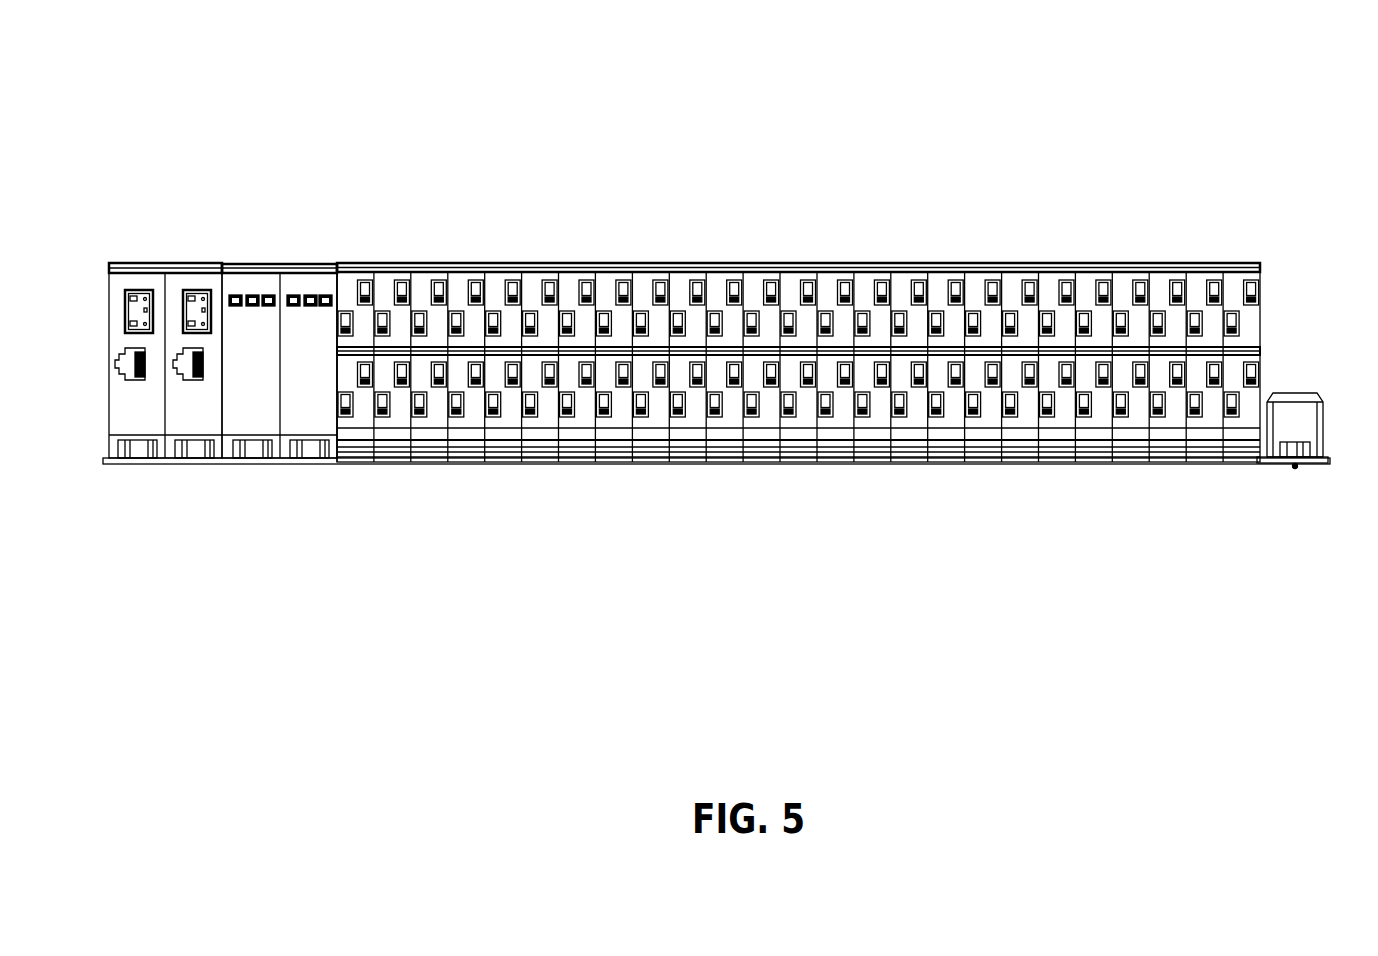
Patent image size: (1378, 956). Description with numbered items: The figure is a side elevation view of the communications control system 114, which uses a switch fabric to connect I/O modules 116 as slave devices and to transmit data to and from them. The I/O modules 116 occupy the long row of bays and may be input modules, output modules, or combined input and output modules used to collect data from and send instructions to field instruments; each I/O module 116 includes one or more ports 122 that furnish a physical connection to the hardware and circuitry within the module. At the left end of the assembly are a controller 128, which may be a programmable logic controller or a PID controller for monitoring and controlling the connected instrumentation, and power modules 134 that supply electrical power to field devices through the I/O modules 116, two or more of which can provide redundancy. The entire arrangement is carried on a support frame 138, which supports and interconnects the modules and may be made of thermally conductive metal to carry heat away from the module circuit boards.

The communications control system 114 is at (1193, 72).
The I/O modules 116 is at (507, 263).
The ports 122 is at (813, 277).
The controller 128 is at (188, 263).
The power modules 134 is at (265, 263).
The support frame 138 is at (1270, 463).